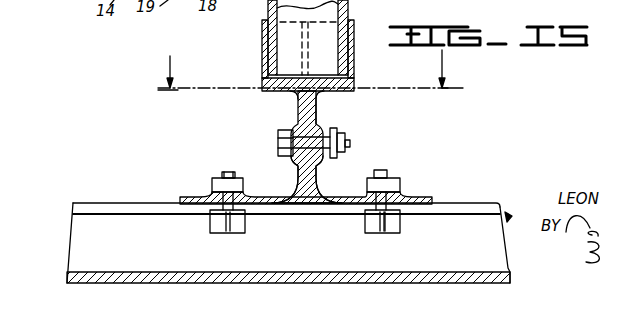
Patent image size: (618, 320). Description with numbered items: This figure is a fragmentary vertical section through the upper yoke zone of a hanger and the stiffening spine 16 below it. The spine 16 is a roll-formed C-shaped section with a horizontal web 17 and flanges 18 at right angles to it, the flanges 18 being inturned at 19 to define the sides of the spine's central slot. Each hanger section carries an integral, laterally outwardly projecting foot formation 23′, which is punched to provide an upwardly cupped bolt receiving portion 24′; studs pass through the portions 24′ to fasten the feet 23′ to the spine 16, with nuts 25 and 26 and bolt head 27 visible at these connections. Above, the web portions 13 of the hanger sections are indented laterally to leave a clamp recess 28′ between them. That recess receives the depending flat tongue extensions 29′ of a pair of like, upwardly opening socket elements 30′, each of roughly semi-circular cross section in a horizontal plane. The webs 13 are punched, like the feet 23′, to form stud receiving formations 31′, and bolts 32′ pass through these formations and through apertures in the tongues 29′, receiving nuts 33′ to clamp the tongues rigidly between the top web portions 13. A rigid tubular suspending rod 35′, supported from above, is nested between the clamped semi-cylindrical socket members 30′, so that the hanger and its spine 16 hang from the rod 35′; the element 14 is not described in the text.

The web portion 13 is at (297, 103).
The flange 14 is at (354, 90).
The stiffening spine 16 is at (515, 205).
The horizontal web 17 is at (407, 274).
The flanges 18 is at (82, 240).
The inturned flange portions 19 is at (468, 210).
The foot formation 23′ is at (250, 193).
The bolt receiving portion 24′ is at (207, 198).
The nut 25 is at (227, 212).
The nut 26 is at (397, 229).
The bolt head 27 is at (221, 177).
The clamp recess 28′ is at (316, 112).
The tongue extension 29′ is at (318, 171).
The socket element 30′ is at (265, 69).
The stud receiving formation 31′ is at (294, 163).
The bolt 32′ is at (334, 146).
The nut 33′ is at (351, 146).
The tubular suspending rod 35′ is at (350, 14).